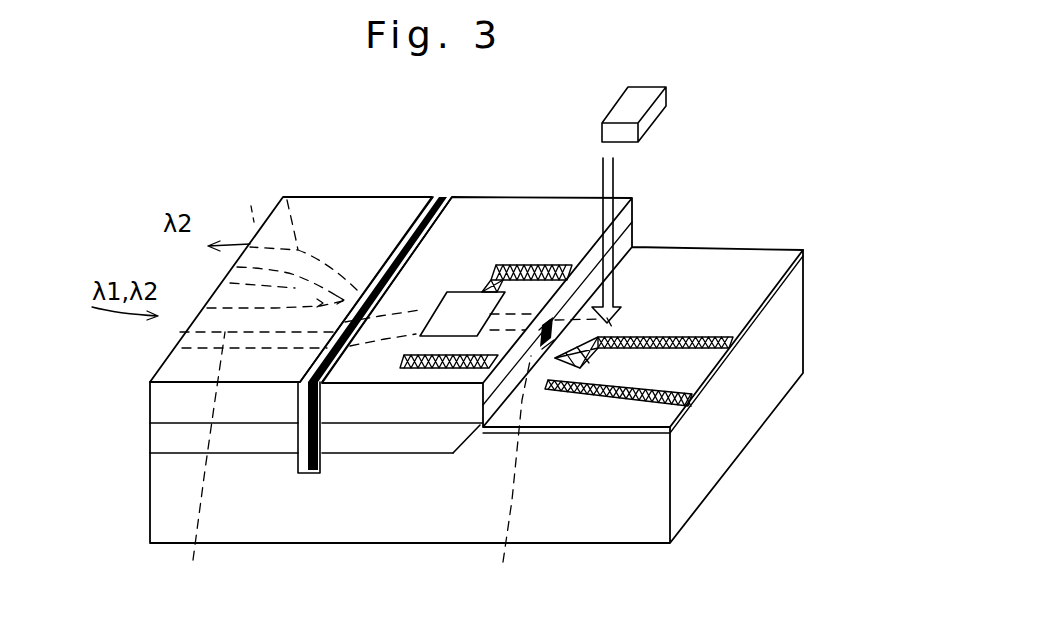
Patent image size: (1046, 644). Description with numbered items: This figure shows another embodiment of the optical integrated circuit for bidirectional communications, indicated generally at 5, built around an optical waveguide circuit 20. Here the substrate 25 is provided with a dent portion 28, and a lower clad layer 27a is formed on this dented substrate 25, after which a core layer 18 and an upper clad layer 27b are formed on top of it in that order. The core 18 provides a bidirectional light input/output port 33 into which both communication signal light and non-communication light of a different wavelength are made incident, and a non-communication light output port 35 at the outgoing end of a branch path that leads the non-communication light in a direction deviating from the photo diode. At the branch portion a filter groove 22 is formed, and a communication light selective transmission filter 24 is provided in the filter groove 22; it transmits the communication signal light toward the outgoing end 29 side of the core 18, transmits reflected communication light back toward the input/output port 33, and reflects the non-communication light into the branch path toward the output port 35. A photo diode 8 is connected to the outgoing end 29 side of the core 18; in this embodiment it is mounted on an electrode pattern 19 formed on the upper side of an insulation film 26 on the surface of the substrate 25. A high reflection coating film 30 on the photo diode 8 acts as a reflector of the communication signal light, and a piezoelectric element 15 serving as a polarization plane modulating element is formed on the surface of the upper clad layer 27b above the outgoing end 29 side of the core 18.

The optical wavelength multiplexer/demultiplexer module 5 is at (794, 120).
The photo diode 8 is at (646, 94).
The piezoelectric element 15 is at (460, 310).
The core 18 is at (287, 200).
The electrode pattern 19 is at (703, 333).
The optical waveguide circuit 20 is at (452, 142).
The filter groove 22 is at (380, 273).
The communication light selective transmission filter 24 is at (404, 206).
The substrate 25 is at (647, 535).
The insulation film 26 is at (620, 434).
The lower clad layer 27a is at (163, 436).
The upper clad layer 27b is at (543, 318).
The dent portion 28 is at (360, 458).
The outgoing end 29 is at (512, 476).
The high reflection coating film 30 is at (672, 111).
The bidirectional light input/output port 33 is at (198, 464).
The non-communication light output port 35 is at (237, 214).